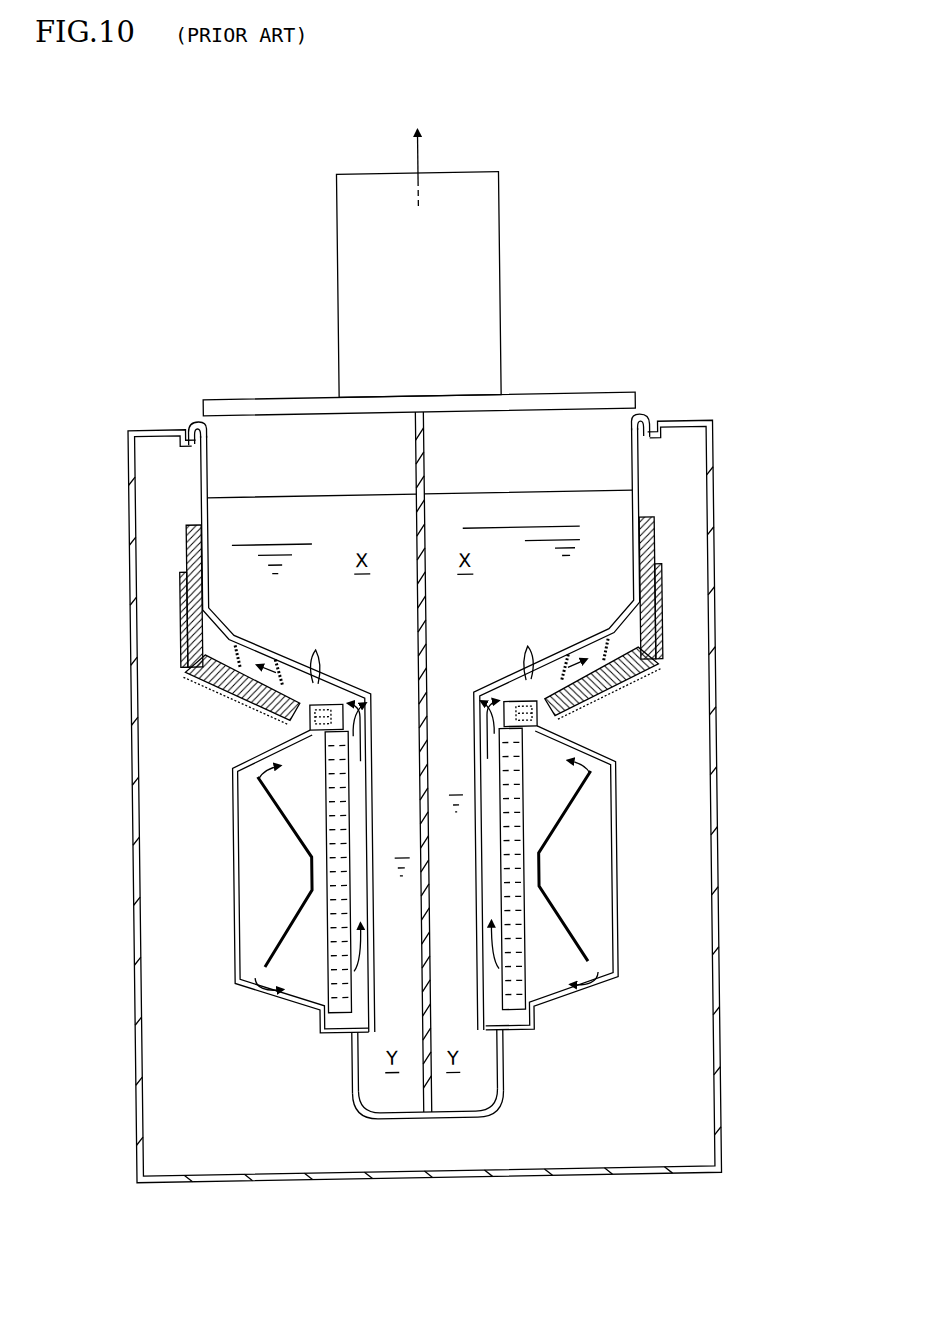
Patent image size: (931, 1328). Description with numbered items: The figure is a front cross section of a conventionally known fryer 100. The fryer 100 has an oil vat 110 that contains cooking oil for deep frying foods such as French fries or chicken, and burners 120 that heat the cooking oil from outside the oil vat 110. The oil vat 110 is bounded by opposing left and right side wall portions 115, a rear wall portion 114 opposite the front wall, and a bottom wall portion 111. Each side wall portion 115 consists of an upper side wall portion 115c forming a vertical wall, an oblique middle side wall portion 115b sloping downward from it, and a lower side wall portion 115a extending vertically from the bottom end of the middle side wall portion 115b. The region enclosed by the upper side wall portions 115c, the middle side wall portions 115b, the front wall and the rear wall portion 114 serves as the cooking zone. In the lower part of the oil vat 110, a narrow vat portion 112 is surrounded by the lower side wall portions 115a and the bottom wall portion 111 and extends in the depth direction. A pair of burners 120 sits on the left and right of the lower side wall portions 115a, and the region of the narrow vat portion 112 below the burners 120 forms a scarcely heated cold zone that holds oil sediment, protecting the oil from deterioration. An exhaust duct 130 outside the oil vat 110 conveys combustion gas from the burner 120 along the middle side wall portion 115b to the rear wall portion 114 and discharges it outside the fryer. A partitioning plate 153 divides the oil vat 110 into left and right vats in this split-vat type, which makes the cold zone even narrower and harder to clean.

The fryer 100 is at (309, 221).
The oil vat 110 is at (255, 375).
The bottom wall portion 111 is at (444, 1122).
The narrow vat portion 112 is at (476, 1087).
The rear wall portion 114 is at (524, 454).
The side wall portions 115 is at (191, 458).
The lower side wall portions 115a is at (370, 796).
The middle side wall portion 115b is at (283, 708).
The upper side wall portion 115c is at (206, 494).
The burners 120 is at (320, 946).
The exhaust duct 130 is at (659, 627).
The partitioning plate 153 is at (430, 597).